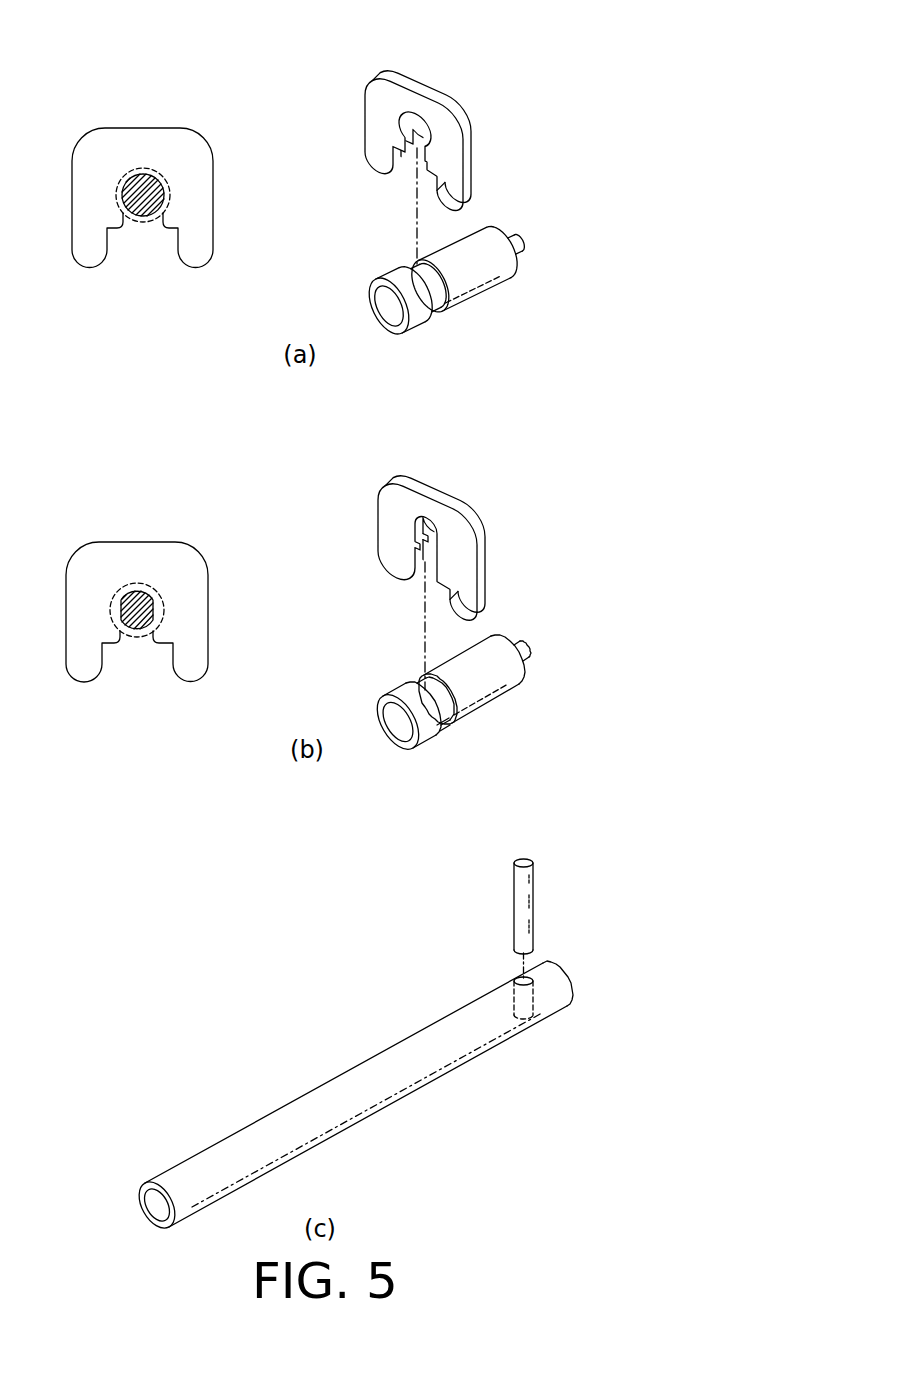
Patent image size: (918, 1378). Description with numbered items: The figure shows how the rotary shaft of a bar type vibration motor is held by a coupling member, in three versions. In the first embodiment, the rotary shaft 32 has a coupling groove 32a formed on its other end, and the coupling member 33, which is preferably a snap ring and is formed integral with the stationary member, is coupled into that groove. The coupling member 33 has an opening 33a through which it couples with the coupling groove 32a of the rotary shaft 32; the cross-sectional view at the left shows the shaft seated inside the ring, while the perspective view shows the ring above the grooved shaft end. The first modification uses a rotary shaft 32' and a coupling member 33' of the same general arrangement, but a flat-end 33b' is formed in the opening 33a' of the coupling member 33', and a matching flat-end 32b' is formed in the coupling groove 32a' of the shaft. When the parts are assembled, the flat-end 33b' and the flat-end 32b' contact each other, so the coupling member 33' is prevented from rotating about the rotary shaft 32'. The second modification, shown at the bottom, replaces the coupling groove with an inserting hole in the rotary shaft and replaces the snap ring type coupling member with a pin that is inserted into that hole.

In FIG. 5a, the rotary shaft 32 is at (344, 228).
In FIG. 5a, the coupling member 33 is at (271, 139).
In FIG. 5a, the opening 33a is at (348, 145).
In FIG. 5a, the coupling groove 32a is at (455, 325).
In FIG. 5b, the rotary shaft 32' is at (325, 636).
In FIG. 5b, the coupling member 33' is at (319, 566).
In FIG. 5b, the opening 33a' is at (370, 507).
In FIG. 5b, the flat-end 33b' is at (361, 530).
In FIG. 5b, the coupling groove 32a' is at (386, 692).
In FIG. 5b, the flat-end 32b' is at (471, 751).